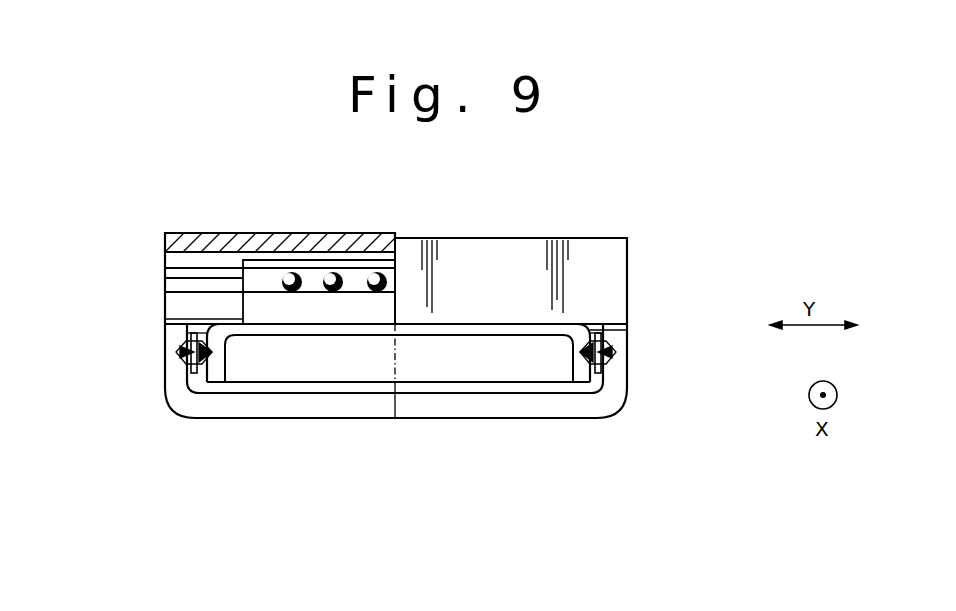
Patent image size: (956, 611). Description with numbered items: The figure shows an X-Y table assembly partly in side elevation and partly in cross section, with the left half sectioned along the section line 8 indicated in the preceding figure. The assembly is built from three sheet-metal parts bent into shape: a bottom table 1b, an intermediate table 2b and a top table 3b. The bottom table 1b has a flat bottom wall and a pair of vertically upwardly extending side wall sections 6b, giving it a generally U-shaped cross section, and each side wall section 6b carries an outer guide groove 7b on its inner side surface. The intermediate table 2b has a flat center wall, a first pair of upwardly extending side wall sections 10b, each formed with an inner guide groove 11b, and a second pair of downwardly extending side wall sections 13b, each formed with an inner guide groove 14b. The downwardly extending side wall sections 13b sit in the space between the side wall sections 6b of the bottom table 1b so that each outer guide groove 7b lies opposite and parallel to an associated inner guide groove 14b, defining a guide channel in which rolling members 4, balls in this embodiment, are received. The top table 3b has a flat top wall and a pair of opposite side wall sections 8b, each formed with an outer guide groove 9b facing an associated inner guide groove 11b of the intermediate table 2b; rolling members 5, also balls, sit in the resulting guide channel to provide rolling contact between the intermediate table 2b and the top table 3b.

The section line 8 is at (105, 258).
The bottom table 1b is at (507, 405).
The side wall sections of top table 8b is at (168, 253).
The top table 3b is at (510, 243).
The outer guide groove of top table 9b is at (165, 278).
The inner guide groove of upwardly extending side wall 11b is at (270, 275).
The rolling members 5 is at (290, 275).
The side wall sections of bottom table 6b is at (168, 330).
The downwardly extending side wall sections 13b is at (222, 336).
The intermediate table 2b is at (297, 315).
The upwardly extending side wall sections 10b is at (355, 315).
The outer guide groove of bottom table 7b is at (213, 365).
The inner guide groove of downwardly extending side wall 14b is at (181, 349).
The rolling members 4 is at (183, 360).